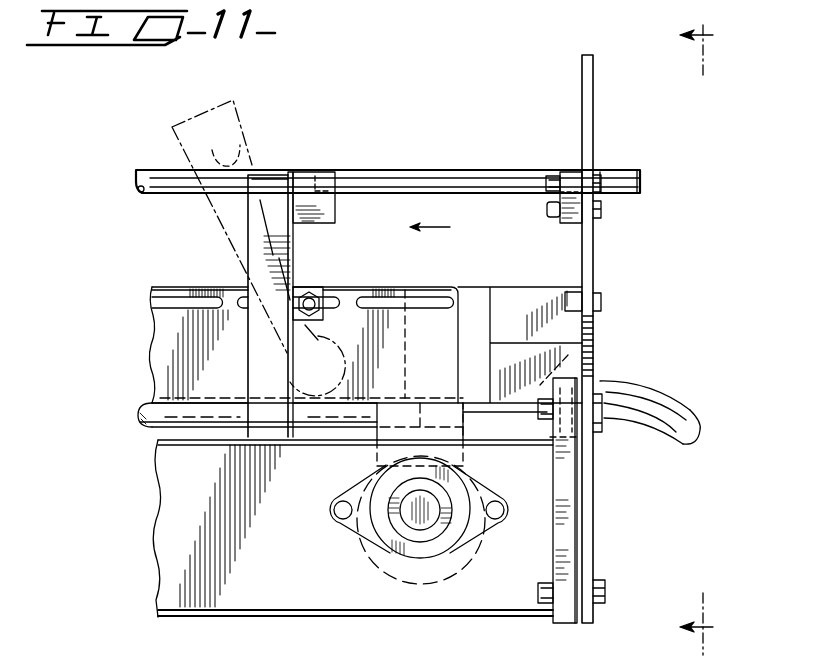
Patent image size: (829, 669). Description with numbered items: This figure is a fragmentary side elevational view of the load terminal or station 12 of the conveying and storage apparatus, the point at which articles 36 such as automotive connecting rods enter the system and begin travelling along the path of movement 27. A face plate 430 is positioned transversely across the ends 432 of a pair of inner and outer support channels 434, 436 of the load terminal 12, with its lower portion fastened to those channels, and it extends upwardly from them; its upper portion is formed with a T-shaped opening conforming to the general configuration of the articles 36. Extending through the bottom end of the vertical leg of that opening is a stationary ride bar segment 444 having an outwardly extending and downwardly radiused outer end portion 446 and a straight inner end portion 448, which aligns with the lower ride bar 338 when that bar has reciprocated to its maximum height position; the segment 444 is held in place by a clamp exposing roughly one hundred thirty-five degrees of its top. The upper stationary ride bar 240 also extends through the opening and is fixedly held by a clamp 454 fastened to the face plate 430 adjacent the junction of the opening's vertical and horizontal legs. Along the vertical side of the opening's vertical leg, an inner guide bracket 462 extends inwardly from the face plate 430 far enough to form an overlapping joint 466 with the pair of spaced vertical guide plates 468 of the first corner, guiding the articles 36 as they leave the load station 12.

The load terminal or station 12 is at (475, 117).
The path of movement 27 is at (450, 227).
The articles 36 is at (242, 142).
The upper stationary ride bar 240 is at (375, 179).
The lower ride bar 338 is at (197, 410).
The face plate 430 is at (590, 135).
The ends 432 is at (515, 582).
The inner support channel 434 is at (285, 612).
The outer support channel 436 is at (277, 630).
The stationary ride bar segment 444 is at (617, 392).
The outer end portion 446 is at (700, 433).
The straight inner end portion 448 is at (583, 352).
The clamp 454 is at (555, 208).
The inner guide bracket 462 is at (510, 287).
The overlapping joint 466 is at (447, 290).
The vertical guide plates 468 is at (163, 287).